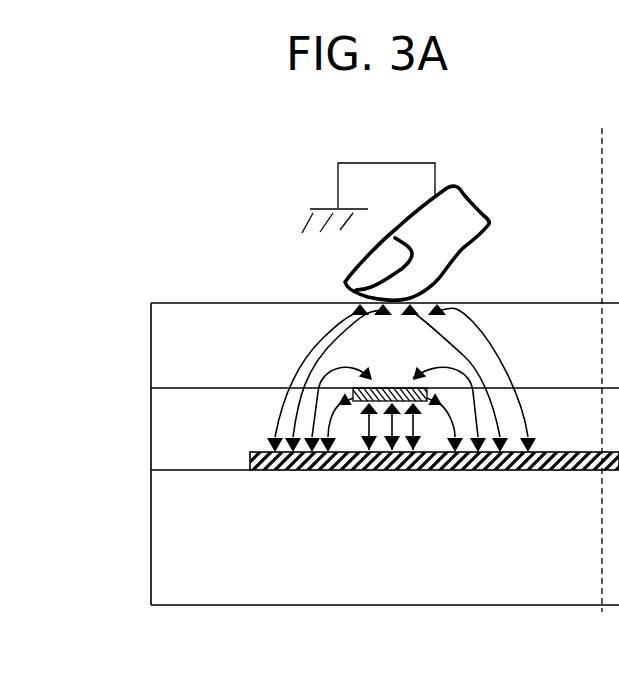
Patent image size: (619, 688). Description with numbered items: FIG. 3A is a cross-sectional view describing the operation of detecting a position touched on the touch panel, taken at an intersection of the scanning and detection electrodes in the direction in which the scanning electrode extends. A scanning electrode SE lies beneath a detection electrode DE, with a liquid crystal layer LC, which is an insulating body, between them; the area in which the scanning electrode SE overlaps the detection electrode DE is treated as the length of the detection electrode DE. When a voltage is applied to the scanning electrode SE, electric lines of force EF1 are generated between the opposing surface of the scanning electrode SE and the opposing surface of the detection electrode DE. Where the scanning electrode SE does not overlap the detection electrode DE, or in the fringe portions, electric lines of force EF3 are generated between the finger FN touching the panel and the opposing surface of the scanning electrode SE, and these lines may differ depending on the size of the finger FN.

The finger FN is at (467, 201).
The electric lines of force EF3 is at (320, 350).
The detection electrode DE is at (355, 389).
The liquid crystal layer LC is at (160, 435).
The scanning electrode SE is at (244, 474).
The electric lines of force EF1 is at (422, 440).